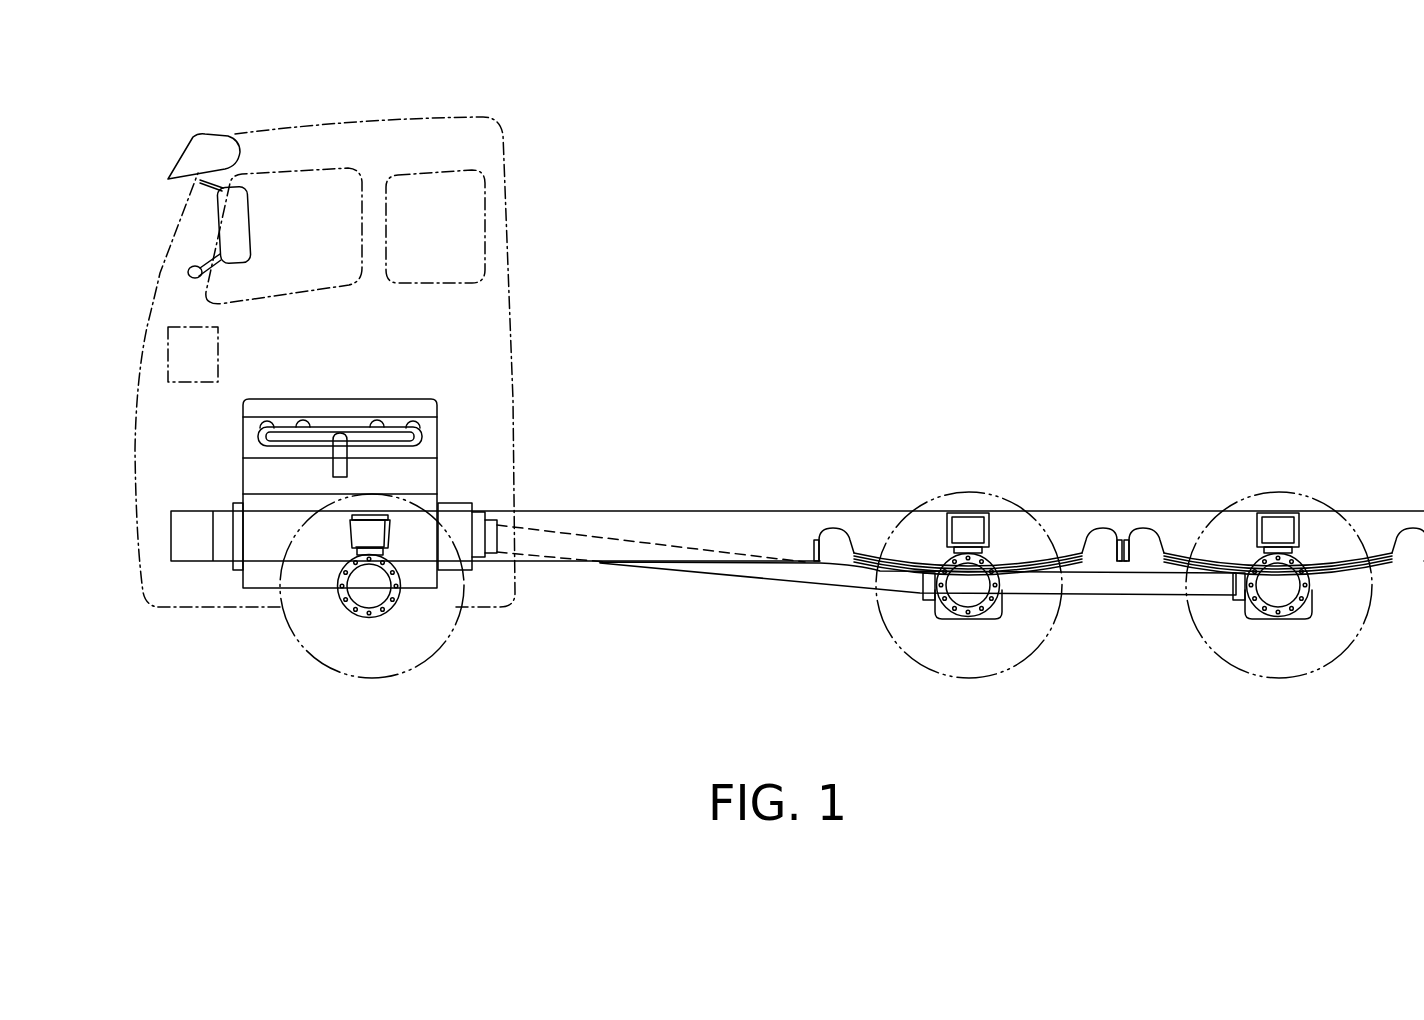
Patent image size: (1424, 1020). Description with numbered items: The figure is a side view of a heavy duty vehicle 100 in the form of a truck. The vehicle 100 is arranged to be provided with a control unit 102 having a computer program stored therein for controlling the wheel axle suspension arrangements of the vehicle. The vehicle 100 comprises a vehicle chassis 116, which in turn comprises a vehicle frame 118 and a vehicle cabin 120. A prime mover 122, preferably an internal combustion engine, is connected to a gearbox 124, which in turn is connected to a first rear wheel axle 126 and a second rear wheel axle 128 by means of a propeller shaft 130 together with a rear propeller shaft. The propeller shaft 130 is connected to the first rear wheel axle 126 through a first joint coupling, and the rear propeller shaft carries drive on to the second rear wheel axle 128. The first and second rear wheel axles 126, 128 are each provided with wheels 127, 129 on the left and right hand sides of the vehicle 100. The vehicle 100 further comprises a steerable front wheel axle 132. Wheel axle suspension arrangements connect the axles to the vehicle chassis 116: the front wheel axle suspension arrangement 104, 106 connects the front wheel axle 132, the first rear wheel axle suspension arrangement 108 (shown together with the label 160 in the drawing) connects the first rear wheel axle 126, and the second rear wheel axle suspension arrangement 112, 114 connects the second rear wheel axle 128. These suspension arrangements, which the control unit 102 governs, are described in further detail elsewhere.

The vehicle 100 is at (580, 123).
The control unit 102 is at (175, 327).
The front wheel axle suspension arrangement 104 is at (392, 533).
The front wheel axle suspension arrangement 106 is at (466, 597).
The first rear wheel axle suspension arrangement 108 is at (1000, 545).
The first rear leaf spring assembly 160 is at (968, 494).
The second rear wheel axle suspension arrangement 112 is at (1310, 545).
The second rear wheel axle suspension arrangement 114 is at (1274, 494).
The vehicle chassis 116 is at (632, 498).
The vehicle frame 118 is at (735, 510).
The vehicle cabin 120 is at (378, 147).
The prime mover 122 is at (437, 410).
The gearbox 124 is at (458, 525).
The first rear wheel axle 126 is at (967, 587).
The wheels 127 is at (1045, 640).
The second rear wheel axle 128 is at (1277, 587).
The wheels 129 is at (1355, 640).
The propeller shaft 130 is at (812, 578).
The front wheel axle 132 is at (368, 588).